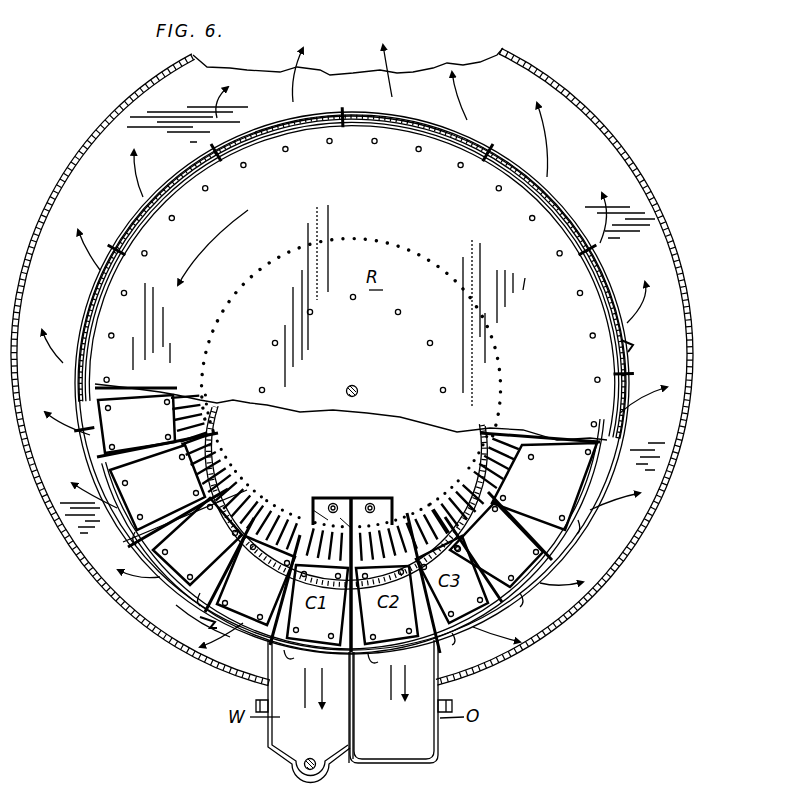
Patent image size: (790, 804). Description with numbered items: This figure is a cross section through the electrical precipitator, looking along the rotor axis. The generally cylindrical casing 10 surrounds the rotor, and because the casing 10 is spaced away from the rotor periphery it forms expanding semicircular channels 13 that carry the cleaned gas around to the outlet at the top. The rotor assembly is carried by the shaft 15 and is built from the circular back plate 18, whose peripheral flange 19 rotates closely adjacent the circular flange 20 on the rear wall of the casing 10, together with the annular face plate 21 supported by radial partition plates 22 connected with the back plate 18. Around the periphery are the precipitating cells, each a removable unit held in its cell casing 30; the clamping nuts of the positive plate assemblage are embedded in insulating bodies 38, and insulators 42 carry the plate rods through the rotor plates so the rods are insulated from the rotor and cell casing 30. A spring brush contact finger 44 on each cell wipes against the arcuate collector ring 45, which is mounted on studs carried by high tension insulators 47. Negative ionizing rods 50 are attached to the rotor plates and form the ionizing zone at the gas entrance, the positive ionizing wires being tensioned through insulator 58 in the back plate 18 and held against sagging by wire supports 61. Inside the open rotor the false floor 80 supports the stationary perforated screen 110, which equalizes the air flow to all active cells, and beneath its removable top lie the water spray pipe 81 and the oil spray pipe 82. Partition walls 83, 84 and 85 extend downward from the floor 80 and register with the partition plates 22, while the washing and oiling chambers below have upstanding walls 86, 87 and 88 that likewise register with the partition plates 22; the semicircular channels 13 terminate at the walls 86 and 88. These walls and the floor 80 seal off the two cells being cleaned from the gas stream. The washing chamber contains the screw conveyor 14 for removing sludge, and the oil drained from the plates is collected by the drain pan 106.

The casing 10 is at (650, 190).
The semicircular channels 13 is at (73, 185).
The screw conveyor 14 is at (312, 758).
The shaft 15 is at (355, 386).
The back plate 18 is at (395, 419).
The peripheral flange 19 is at (110, 278).
The circular flange 20 is at (105, 302).
The face plate 21 is at (135, 537).
The partition plates 22 is at (235, 552).
The cell casing 30 is at (150, 437).
The insulating body 38 is at (197, 488).
The insulators 42 is at (330, 142).
The brush contact finger 44 is at (197, 618).
The collector ring 45 is at (170, 602).
The high tension insulators 47 is at (628, 343).
The negative ionizing rods 50 is at (231, 404).
The insulator 58 is at (214, 332).
The wire supports 61 is at (273, 550).
The false floor 80 is at (356, 497).
The water spray pipe 81 is at (322, 512).
The oil spray pipe 82 is at (372, 503).
The partition wall 83 is at (312, 515).
The partition wall 84 is at (334, 503).
The partition wall 85 is at (393, 503).
The upstanding wall 86 is at (268, 740).
The upstanding wall 87 is at (355, 722).
The upstanding wall 88 is at (437, 740).
The drain pan 106 is at (414, 765).
The stationary screen 110 is at (240, 443).